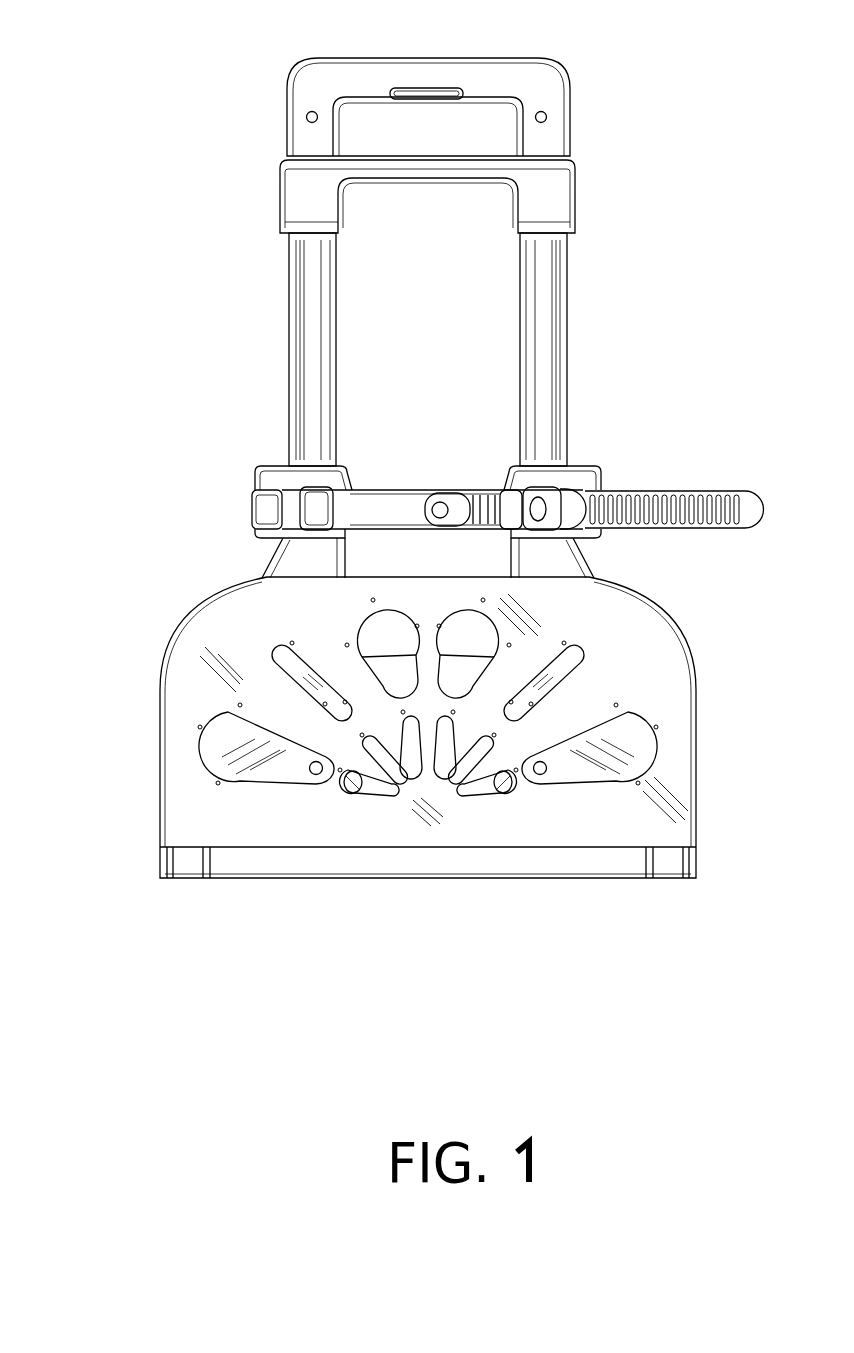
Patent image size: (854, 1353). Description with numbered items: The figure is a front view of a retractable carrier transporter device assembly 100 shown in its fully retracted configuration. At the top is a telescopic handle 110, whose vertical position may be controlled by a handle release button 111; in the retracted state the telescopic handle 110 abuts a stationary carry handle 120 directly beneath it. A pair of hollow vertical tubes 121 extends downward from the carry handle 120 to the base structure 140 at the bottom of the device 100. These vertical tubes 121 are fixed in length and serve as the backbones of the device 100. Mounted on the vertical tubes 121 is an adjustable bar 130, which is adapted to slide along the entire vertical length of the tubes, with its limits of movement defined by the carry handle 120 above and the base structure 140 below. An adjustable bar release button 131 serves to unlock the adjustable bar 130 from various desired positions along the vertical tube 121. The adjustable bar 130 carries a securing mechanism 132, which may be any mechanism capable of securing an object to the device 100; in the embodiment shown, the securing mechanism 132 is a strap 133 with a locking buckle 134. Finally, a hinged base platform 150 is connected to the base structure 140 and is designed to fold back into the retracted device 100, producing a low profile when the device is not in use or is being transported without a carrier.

The retractable carrier transporter device assembly 100 is at (104, 222).
The telescopic handle 110 is at (297, 98).
The handle release button 111 is at (443, 100).
The stationary carry handle 120 is at (287, 200).
The vertical tubes 121 is at (295, 382).
The adjustable bar 130 is at (262, 484).
The adjustable bar release button 131 is at (446, 488).
The securing mechanism 132 is at (255, 516).
The strap 133 is at (712, 497).
The locking buckle 134 is at (560, 500).
The base structure 140 is at (278, 565).
The hinged base platform 150 is at (178, 766).